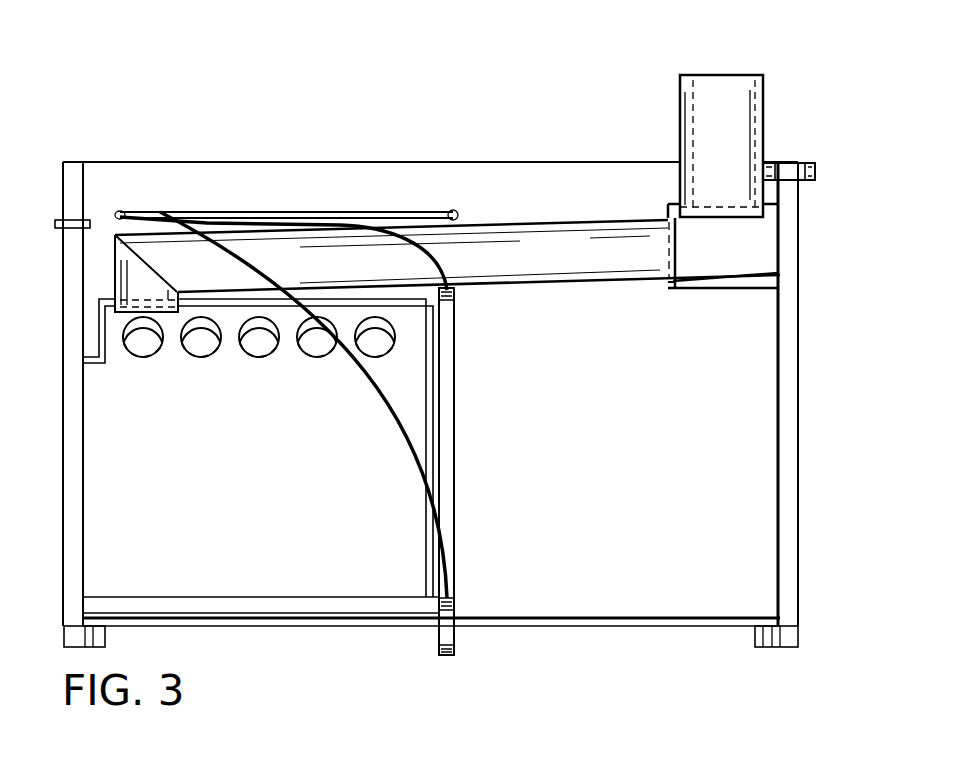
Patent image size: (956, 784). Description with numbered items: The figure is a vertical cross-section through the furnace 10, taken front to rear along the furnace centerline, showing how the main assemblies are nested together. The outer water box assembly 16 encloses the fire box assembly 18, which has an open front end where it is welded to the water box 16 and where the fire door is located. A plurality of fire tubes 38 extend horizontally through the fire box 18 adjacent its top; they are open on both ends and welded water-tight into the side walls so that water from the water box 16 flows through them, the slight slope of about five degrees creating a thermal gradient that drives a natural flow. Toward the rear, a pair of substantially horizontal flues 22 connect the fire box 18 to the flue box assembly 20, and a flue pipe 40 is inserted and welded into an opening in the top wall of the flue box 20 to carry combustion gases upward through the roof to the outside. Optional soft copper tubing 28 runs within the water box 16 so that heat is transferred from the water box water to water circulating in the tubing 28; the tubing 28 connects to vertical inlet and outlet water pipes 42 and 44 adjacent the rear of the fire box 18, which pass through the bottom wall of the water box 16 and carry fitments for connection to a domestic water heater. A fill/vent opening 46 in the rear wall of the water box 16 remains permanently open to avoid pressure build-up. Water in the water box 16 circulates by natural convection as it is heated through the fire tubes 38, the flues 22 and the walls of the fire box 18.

The furnace 10 is at (800, 358).
The water box assembly 16 is at (782, 507).
The fire box assembly 18 is at (253, 598).
The flue box assembly 20 is at (758, 237).
The flues 22 is at (473, 223).
The copper tubing 28 is at (163, 207).
The fire tubes 38 is at (138, 356).
The flue pipe 40 is at (752, 95).
The inlet water pipe 42 is at (457, 597).
The outlet water pipe 44 is at (465, 283).
The fill/vent opening 46 is at (808, 165).